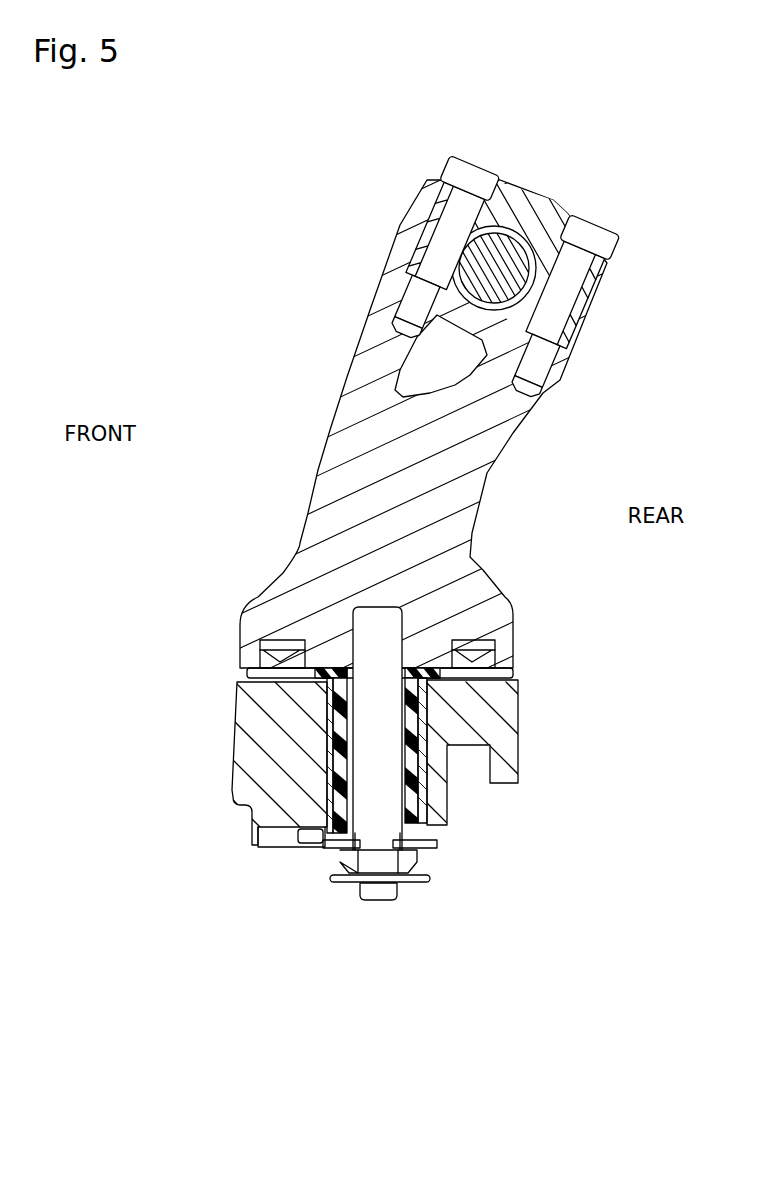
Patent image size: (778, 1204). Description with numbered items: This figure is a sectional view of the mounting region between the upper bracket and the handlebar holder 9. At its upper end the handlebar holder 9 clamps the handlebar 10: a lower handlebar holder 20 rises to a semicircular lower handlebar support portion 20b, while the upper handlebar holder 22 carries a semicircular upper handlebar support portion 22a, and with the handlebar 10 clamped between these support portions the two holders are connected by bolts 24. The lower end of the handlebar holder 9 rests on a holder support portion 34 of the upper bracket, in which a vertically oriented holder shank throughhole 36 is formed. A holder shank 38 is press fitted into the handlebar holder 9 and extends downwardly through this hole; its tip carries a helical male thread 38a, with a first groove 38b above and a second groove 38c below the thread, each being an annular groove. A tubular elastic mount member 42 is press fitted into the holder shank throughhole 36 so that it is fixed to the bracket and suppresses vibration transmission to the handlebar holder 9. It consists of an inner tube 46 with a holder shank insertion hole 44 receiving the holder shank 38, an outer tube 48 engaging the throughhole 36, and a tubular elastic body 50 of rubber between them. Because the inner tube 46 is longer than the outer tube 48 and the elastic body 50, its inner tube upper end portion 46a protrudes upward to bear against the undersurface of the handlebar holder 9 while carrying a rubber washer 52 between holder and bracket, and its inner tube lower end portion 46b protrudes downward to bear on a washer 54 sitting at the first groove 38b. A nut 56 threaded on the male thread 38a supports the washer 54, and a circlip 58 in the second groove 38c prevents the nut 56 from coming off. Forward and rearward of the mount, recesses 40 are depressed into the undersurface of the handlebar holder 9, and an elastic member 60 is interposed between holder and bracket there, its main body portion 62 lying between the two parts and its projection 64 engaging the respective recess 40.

The handlebar holder 9 is at (330, 368).
The handlebar 10 is at (485, 257).
The lower handlebar holder 20 is at (330, 432).
The lower handlebar support portion 20b is at (553, 322).
The upper handlebar holder 22 is at (527, 203).
The upper handlebar support portion 22a is at (536, 262).
The bolt 24 is at (488, 164).
The holder support portion 34 is at (247, 733).
The holder shank throughhole 36 is at (440, 812).
The holder shank 38 is at (432, 726).
The helical male thread 38a is at (387, 895).
The first groove 38b is at (350, 860).
The second groove 38c is at (365, 885).
The recess 40 is at (267, 645).
The elastic mount member 42 is at (385, 724).
The holder shank insertion hole 44 is at (380, 860).
The inner tube 46 is at (334, 700).
The inner tube upper end portion 46a is at (350, 668).
The inner tube lower end portion 46b is at (297, 843).
The outer tube 48 is at (432, 818).
The elastic body 50 is at (422, 832).
The rubber washer 52 is at (382, 737).
The washer 54 is at (323, 847).
The nut 56 is at (424, 878).
The circlip 58 is at (340, 880).
The elastic member 60 is at (309, 658).
The main body portion 62 is at (257, 673).
The projection 64 is at (267, 653).